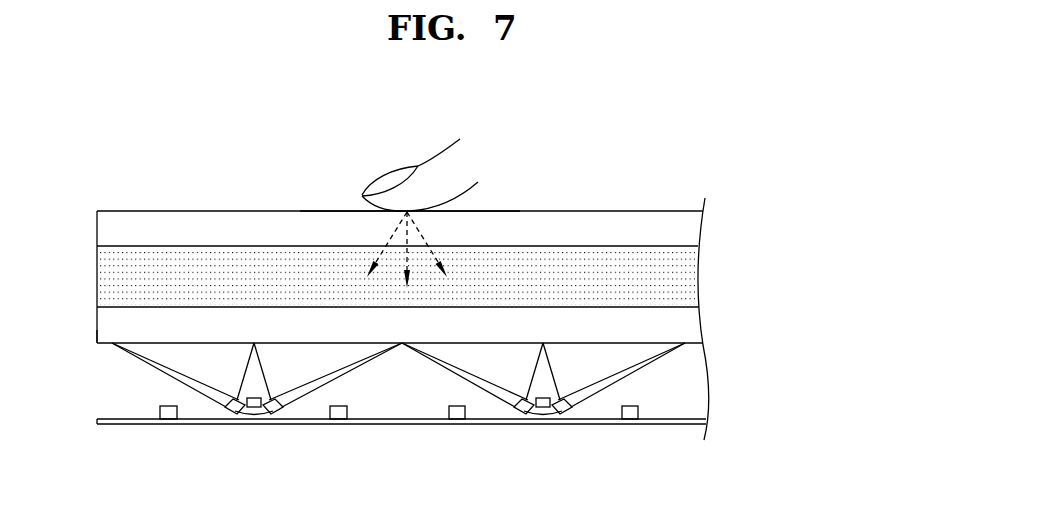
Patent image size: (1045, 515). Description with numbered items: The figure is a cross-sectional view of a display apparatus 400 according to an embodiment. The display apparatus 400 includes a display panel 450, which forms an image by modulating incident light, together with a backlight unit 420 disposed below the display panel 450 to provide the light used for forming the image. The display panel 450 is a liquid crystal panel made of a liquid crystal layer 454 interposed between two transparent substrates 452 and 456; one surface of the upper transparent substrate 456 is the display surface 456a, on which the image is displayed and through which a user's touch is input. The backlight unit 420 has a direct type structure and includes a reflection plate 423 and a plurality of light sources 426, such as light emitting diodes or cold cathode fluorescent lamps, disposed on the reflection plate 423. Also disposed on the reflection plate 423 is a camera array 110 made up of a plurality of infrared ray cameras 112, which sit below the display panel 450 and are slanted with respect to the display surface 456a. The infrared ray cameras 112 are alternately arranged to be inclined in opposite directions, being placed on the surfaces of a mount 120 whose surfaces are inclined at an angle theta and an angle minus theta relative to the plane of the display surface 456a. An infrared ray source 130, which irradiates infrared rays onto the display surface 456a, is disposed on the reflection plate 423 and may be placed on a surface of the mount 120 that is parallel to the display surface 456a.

The display apparatus 400 is at (678, 149).
The display panel 450 is at (785, 200).
The transparent substrate 456 is at (693, 227).
The display surface 456a is at (610, 210).
The liquid crystal layer 454 is at (686, 272).
The transparent substrate 452 is at (693, 326).
The backlight unit 420 is at (785, 387).
The reflection plate 423 is at (703, 422).
The light sources 426 is at (632, 409).
The camera array 110 is at (200, 404).
The infrared ray cameras 112 is at (231, 410).
The mount 120 is at (253, 415).
The infrared ray source 130 is at (259, 410).